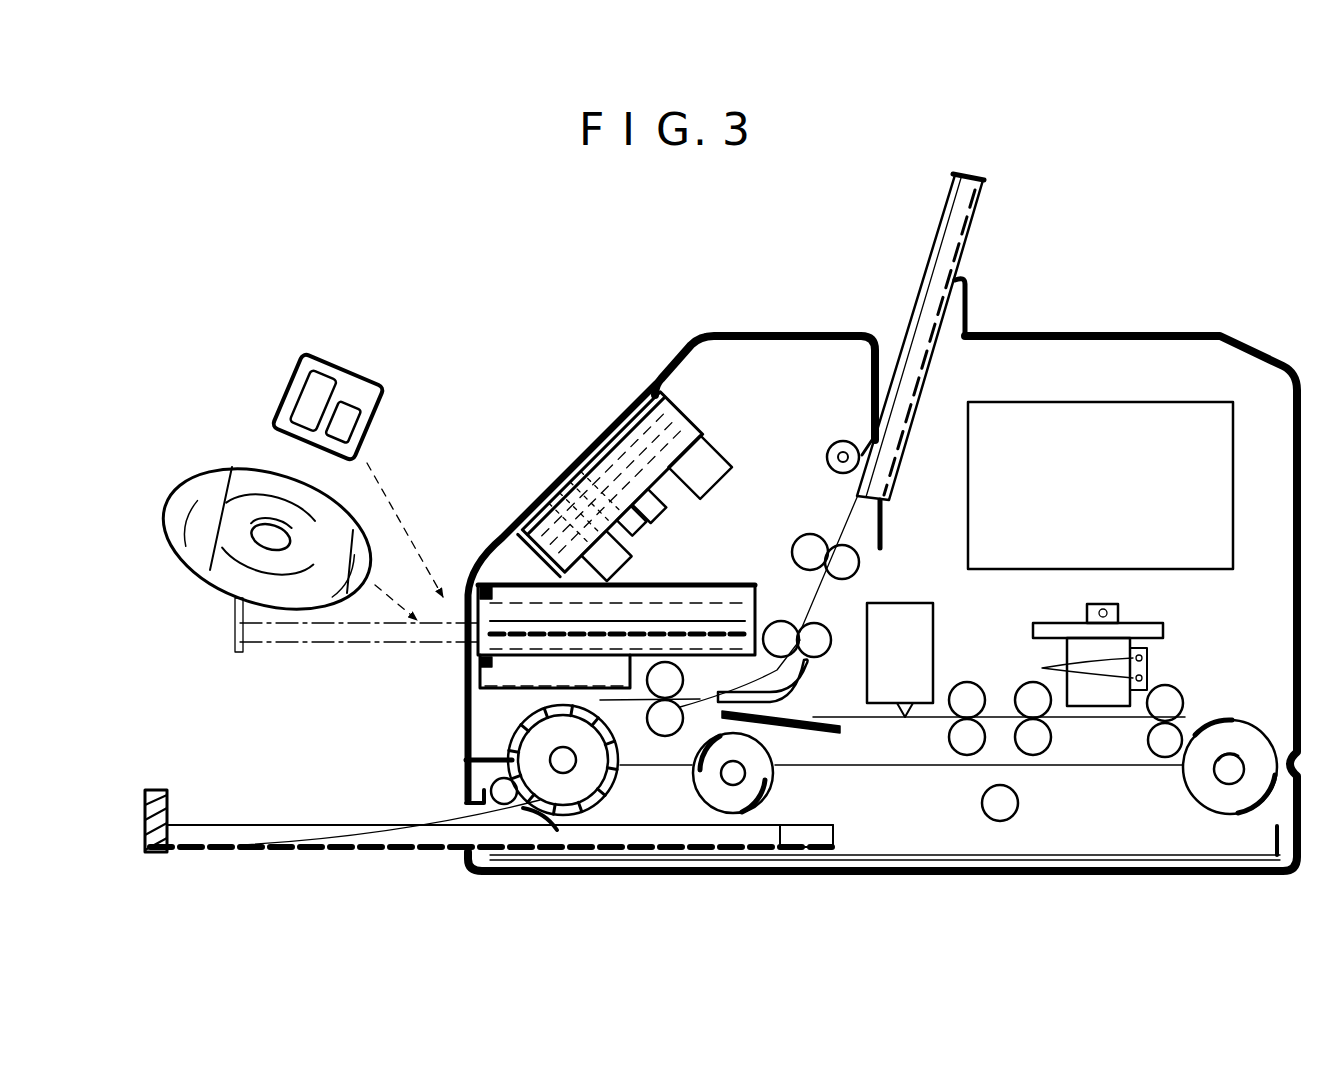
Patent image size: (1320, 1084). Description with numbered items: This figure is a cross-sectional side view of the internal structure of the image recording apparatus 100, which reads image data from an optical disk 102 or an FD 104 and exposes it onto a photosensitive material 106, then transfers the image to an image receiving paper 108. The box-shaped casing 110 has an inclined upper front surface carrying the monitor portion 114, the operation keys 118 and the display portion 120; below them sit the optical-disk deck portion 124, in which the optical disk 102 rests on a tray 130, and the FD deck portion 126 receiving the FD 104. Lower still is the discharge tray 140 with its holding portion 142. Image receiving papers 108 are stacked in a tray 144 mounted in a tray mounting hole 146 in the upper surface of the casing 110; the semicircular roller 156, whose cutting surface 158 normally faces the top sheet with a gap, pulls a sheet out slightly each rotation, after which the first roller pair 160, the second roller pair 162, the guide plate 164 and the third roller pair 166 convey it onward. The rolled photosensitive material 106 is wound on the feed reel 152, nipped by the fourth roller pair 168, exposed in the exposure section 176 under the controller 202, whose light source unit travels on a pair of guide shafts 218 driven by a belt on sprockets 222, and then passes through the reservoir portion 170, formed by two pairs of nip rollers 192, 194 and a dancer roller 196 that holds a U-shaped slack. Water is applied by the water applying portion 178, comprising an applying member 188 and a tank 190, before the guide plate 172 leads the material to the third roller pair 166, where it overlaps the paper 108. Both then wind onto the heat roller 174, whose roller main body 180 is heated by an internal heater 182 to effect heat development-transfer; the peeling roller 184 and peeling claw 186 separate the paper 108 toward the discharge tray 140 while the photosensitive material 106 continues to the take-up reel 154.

The image recording apparatus 100 is at (656, 298).
The optical disk 102 is at (224, 470).
The FD 104 is at (378, 366).
The photosensitive material 106 is at (1198, 720).
The image receiving paper 108 is at (945, 212).
The casing 110 is at (790, 330).
The monitor portion 114 is at (640, 420).
The operation keys 118 is at (620, 548).
The display portion 120 is at (720, 452).
The optical-disk deck portion 124 is at (466, 660).
The FD deck portion 126 is at (480, 596).
The tray 130 is at (456, 606).
The discharge tray 140 is at (292, 852).
The holding portion 142 is at (168, 825).
The tray 144 is at (985, 212).
The tray mounting hole 146 is at (872, 420).
The feed reel 152 is at (1230, 778).
The take-up reel 154 is at (737, 780).
The semicircular roller 156 is at (836, 443).
The cutting surface 158 is at (857, 486).
The first roller pair 160 is at (866, 558).
The second roller pair 162 is at (840, 622).
The guide plate 164 is at (808, 668).
The third roller pair 166 is at (686, 655).
The fourth roller pair 168 is at (1178, 690).
The reservoir portion 170 is at (1000, 826).
The guide plate 172 is at (834, 740).
The heat roller 174 is at (614, 786).
The exposure section 176 is at (1140, 619).
The water applying portion 178 is at (940, 626).
The roller main body 180 is at (575, 812).
The heater 182 is at (553, 757).
The peeling roller 184 is at (462, 782).
The peeling claw 186 is at (505, 806).
The applying member 188 is at (908, 718).
The tank 190 is at (922, 676).
The nip rollers 192 is at (1045, 748).
The nip rollers 194 is at (973, 748).
The dancer roller 196 is at (1010, 812).
The controller 202 is at (1090, 400).
The guide shafts 218 is at (1061, 667).
The sprockets 222 is at (1098, 605).